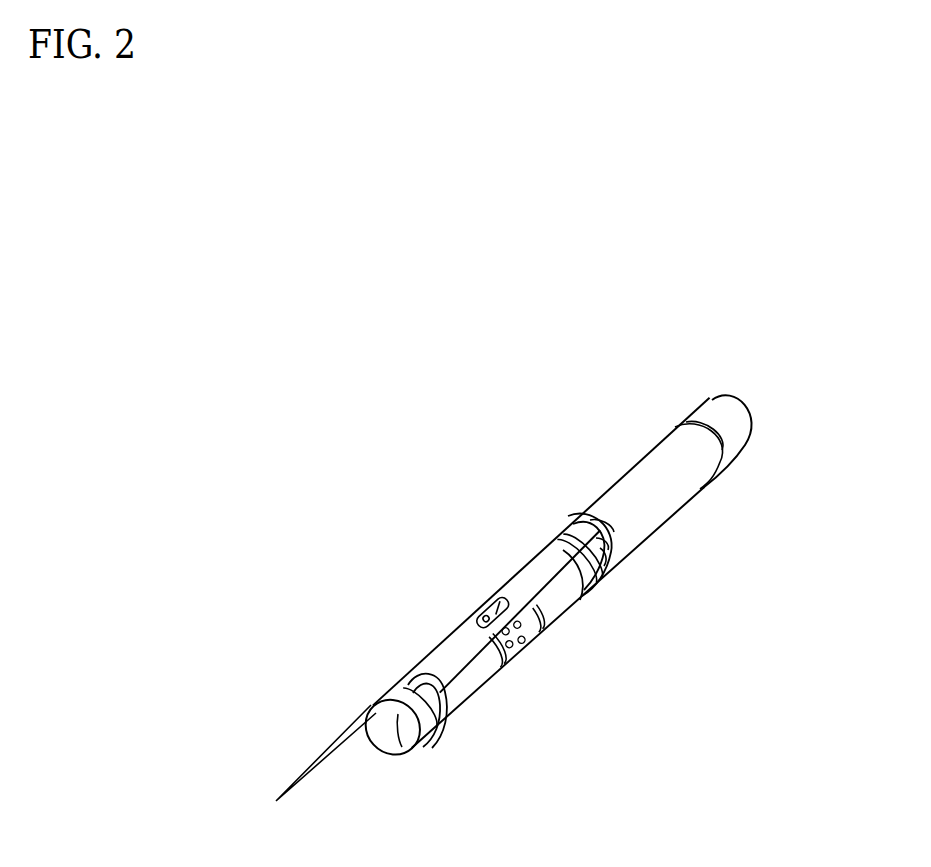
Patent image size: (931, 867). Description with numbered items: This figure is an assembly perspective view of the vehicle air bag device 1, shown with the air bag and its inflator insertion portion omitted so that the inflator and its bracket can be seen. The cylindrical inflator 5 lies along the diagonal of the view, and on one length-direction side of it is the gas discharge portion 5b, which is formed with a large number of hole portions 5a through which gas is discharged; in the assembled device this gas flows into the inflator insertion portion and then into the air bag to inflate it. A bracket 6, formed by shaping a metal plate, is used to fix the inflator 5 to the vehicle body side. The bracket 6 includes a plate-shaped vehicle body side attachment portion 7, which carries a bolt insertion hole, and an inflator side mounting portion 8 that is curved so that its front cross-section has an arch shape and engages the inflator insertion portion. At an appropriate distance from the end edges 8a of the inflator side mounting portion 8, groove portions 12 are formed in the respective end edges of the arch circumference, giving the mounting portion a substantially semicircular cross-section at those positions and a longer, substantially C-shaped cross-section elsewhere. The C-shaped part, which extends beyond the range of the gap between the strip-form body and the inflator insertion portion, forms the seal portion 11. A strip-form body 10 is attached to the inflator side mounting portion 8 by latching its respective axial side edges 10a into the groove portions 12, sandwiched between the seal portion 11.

The vehicle air bag device 1 is at (752, 353).
The inflator 5 is at (718, 511).
The hole portions 5a is at (527, 623).
The gas discharge portion 5b is at (510, 656).
The bracket 6 is at (493, 540).
The vehicle body side attachment portion 7 is at (310, 760).
The inflator side mounting portion 8 is at (452, 597).
The end edges 8a is at (603, 527).
The strip-form body 10 is at (447, 692).
The axial side edges 10a is at (603, 560).
The seal portion 11 is at (598, 525).
The groove portions 12 is at (443, 712).